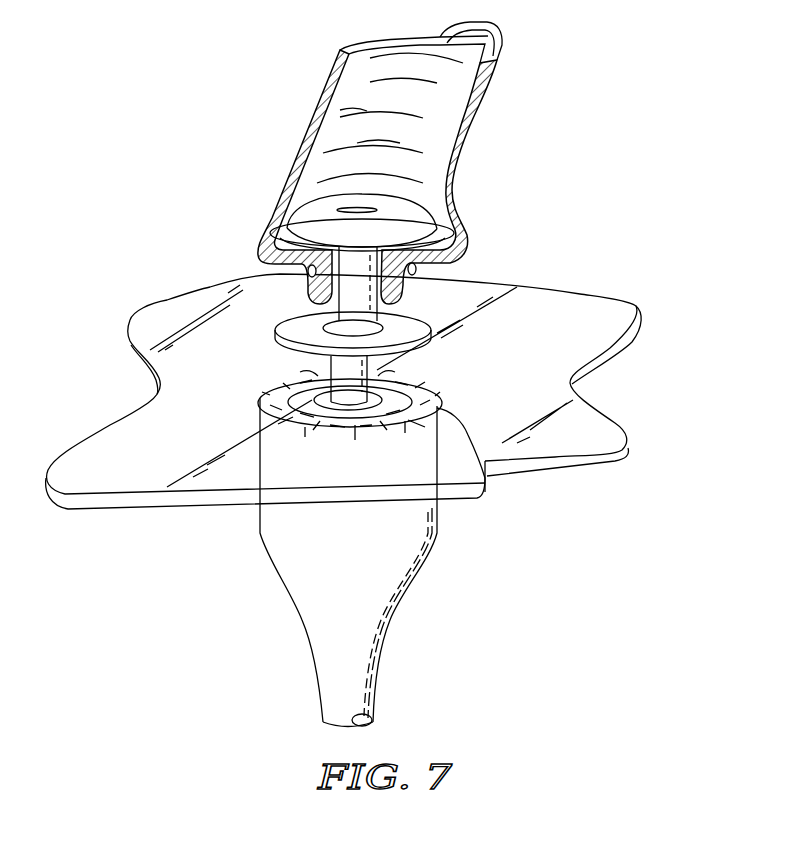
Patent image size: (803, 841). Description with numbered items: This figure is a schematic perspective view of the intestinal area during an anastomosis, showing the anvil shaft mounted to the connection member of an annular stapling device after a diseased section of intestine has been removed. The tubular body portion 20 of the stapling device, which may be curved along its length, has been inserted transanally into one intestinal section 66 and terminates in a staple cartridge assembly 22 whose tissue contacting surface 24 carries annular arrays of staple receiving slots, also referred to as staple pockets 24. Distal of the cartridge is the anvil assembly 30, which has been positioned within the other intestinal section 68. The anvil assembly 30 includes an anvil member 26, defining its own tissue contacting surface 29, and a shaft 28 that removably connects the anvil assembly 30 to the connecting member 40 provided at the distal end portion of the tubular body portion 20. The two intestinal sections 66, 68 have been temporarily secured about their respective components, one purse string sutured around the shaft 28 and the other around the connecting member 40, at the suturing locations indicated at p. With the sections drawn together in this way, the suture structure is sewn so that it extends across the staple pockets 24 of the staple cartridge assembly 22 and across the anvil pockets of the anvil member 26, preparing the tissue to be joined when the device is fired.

The tubular body portion 20 is at (295, 541).
The staple cartridge assembly 22 is at (434, 530).
The tissue contacting surface 24 is at (487, 488).
The anvil member 26 is at (412, 210).
The shaft 28 is at (354, 283).
The tissue contacting surface 29 is at (458, 224).
The anvil assembly 30 is at (327, 210).
The connecting member 40 is at (300, 382).
The intestinal section 66 is at (490, 96).
The intestinal section 68 is at (638, 298).
The pressure point p is at (428, 268).